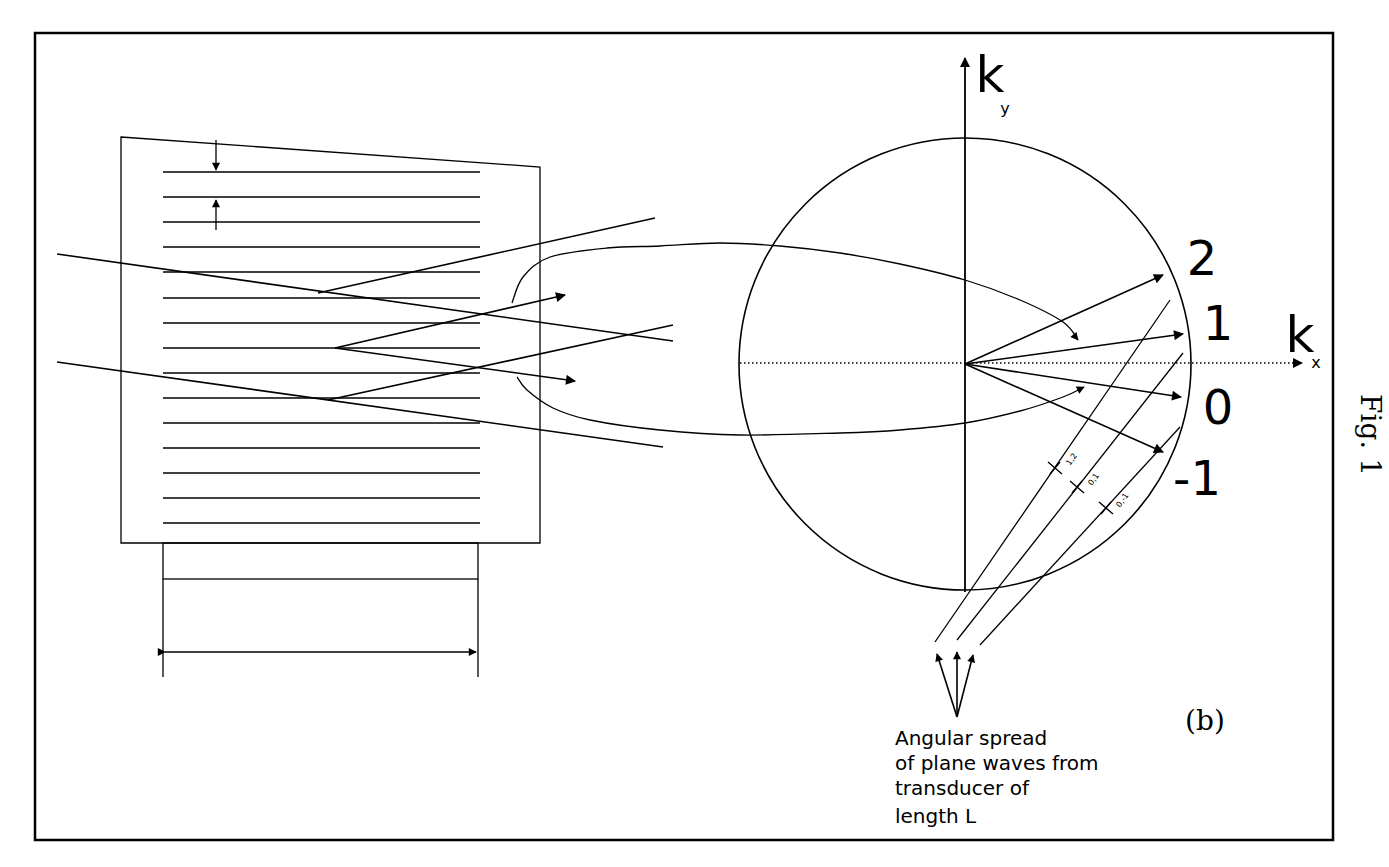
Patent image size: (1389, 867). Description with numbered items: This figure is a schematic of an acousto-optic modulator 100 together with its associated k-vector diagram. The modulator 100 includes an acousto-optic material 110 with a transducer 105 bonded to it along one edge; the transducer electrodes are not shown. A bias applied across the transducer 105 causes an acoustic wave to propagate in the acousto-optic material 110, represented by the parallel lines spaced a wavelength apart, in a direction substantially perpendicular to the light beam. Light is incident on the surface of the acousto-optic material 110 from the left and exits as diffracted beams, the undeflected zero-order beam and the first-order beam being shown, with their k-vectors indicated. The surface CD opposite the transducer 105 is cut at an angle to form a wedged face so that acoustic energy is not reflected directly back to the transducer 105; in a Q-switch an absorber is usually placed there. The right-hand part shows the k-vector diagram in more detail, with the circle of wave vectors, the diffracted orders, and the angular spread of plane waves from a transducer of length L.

The acousto-optic modulator 100 is at (565, 600).
The transducer 105 is at (187, 560).
The acousto-optic material 110 is at (540, 208).